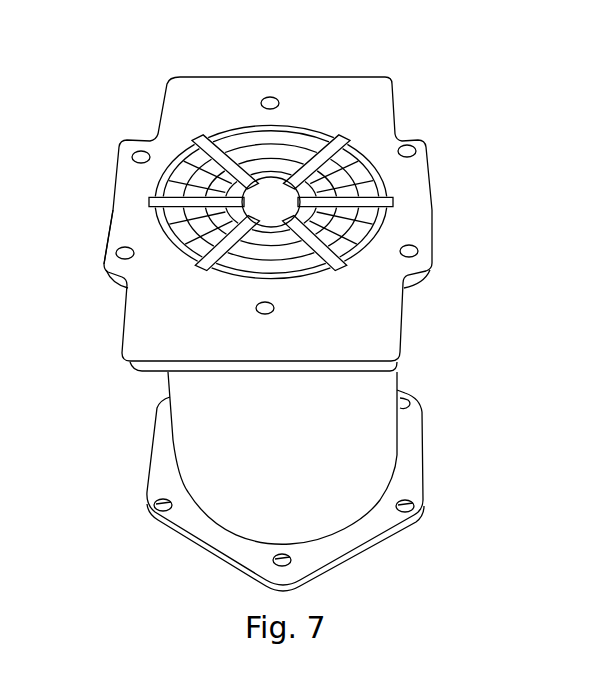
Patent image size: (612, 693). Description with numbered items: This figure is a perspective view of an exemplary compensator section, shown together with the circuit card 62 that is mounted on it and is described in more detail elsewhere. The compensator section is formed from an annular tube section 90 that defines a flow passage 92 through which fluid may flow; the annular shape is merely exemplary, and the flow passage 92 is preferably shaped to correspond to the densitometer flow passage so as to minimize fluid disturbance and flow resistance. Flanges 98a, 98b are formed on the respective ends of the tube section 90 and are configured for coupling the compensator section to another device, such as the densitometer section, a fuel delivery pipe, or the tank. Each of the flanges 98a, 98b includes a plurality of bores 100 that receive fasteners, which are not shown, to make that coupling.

The circuit card 62 is at (413, 170).
The flow passage 92 is at (268, 188).
The tube section 90 is at (380, 428).
The flange 98a is at (175, 520).
The flange 98b is at (114, 317).
The bores 100 is at (410, 507).